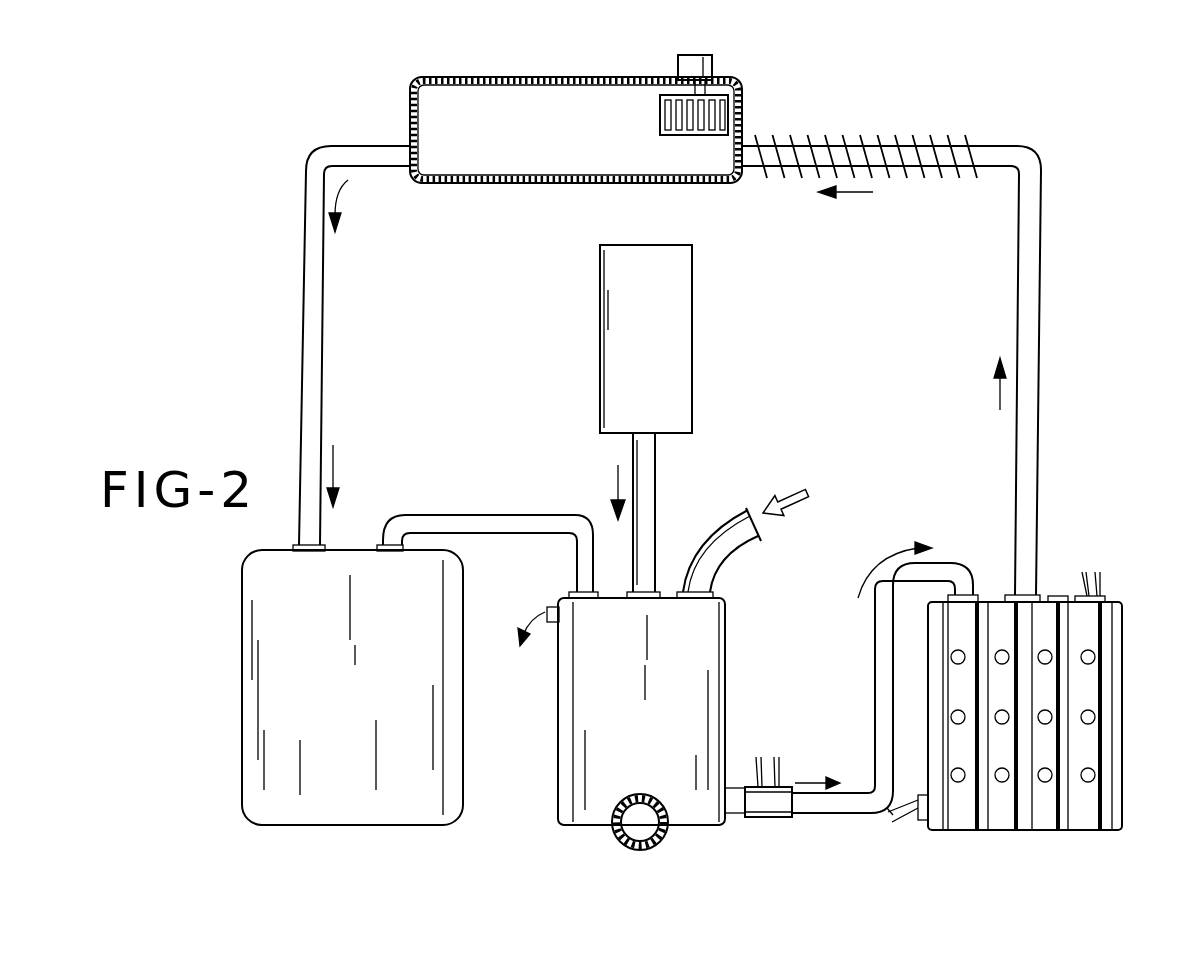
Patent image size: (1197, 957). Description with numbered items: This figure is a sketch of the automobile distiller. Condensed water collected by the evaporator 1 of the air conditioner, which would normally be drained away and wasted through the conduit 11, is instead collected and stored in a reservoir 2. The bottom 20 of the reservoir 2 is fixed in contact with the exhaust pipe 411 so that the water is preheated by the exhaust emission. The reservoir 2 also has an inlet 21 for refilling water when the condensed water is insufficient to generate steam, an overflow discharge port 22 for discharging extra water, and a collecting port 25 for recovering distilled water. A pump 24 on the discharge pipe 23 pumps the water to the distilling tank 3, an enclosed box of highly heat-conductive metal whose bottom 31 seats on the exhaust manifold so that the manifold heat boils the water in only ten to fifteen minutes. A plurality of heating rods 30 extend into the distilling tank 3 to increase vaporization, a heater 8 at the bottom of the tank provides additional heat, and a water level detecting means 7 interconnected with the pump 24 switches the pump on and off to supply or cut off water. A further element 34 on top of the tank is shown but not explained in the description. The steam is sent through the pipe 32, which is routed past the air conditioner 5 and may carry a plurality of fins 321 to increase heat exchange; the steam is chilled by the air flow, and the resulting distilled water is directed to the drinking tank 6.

The evaporator 1 is at (680, 322).
The conduit 11 is at (645, 485).
The reservoir 2 is at (722, 642).
The bottom of the reservoir 20 is at (585, 826).
The inlet 21 is at (722, 548).
The overflow discharge port 22 is at (556, 626).
The discharge pipe 23 is at (420, 527).
The pump 24 is at (763, 810).
The collecting port 25 is at (570, 592).
The distilling tank 3 is at (1033, 701).
The heating rods 30 is at (1094, 712).
The bottom of the distilling tank 31 is at (1083, 815).
The pipe 32 is at (1030, 298).
The fins 321 is at (938, 172).
The pipe fitting 34 is at (1058, 595).
The exhaust pipe 411 is at (636, 833).
The air conditioner 5 is at (428, 110).
The drinking tank 6 is at (346, 568).
The water level detecting means 7 is at (1098, 597).
The heater 8 is at (921, 820).